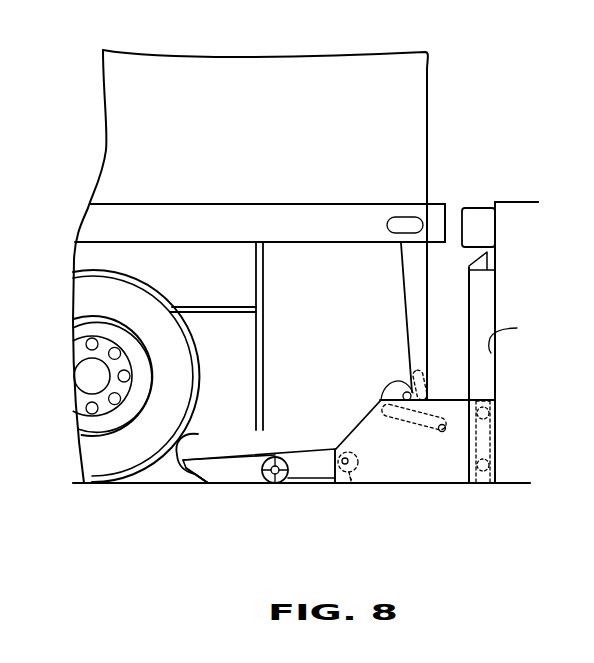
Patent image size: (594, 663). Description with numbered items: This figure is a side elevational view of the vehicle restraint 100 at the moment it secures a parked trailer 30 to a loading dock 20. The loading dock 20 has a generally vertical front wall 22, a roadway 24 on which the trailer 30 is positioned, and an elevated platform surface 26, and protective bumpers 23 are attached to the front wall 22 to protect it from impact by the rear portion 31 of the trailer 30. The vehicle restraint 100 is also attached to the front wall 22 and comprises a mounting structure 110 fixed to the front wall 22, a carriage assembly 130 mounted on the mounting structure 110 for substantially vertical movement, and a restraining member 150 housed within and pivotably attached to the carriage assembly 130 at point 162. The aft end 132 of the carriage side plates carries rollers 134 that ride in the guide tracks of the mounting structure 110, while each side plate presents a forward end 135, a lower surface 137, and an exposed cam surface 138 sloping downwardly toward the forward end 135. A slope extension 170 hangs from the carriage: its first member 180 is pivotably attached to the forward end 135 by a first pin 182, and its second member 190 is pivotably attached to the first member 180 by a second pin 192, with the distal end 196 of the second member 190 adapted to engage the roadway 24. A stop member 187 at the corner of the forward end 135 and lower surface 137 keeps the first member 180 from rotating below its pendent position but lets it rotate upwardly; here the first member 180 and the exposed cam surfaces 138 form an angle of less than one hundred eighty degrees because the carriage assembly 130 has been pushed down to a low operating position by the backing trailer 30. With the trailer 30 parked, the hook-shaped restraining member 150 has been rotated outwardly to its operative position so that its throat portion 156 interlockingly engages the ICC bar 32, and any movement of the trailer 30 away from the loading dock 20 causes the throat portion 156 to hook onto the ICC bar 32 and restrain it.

The loading dock 20 is at (511, 239).
The front wall 22 is at (517, 334).
The protective bumpers 23 is at (477, 218).
The roadway 24 is at (156, 480).
The elevated platform surface 26 is at (522, 202).
The trailer 30 is at (385, 141).
The rear portion 31 is at (436, 212).
The ICC bar 32 is at (422, 388).
The vehicle restraint 100 is at (449, 376).
The mounting structure 110 is at (487, 294).
The carriage assembly 130 is at (457, 478).
The aft end 132 is at (494, 430).
The rollers 134 is at (494, 455).
The forward end 135 is at (333, 465).
The lower surface 137 is at (411, 478).
The exposed cam surface 138 is at (364, 421).
The restraining member 150 is at (386, 394).
The throat portion 156 is at (406, 390).
The point 162 is at (443, 432).
The slope extension 170 is at (278, 447).
The first member 180 is at (318, 472).
The first pin 182 is at (356, 455).
The stop member 187 is at (362, 470).
The second member 190 is at (232, 477).
The second pin 192 is at (275, 484).
The distal end 196 is at (209, 453).